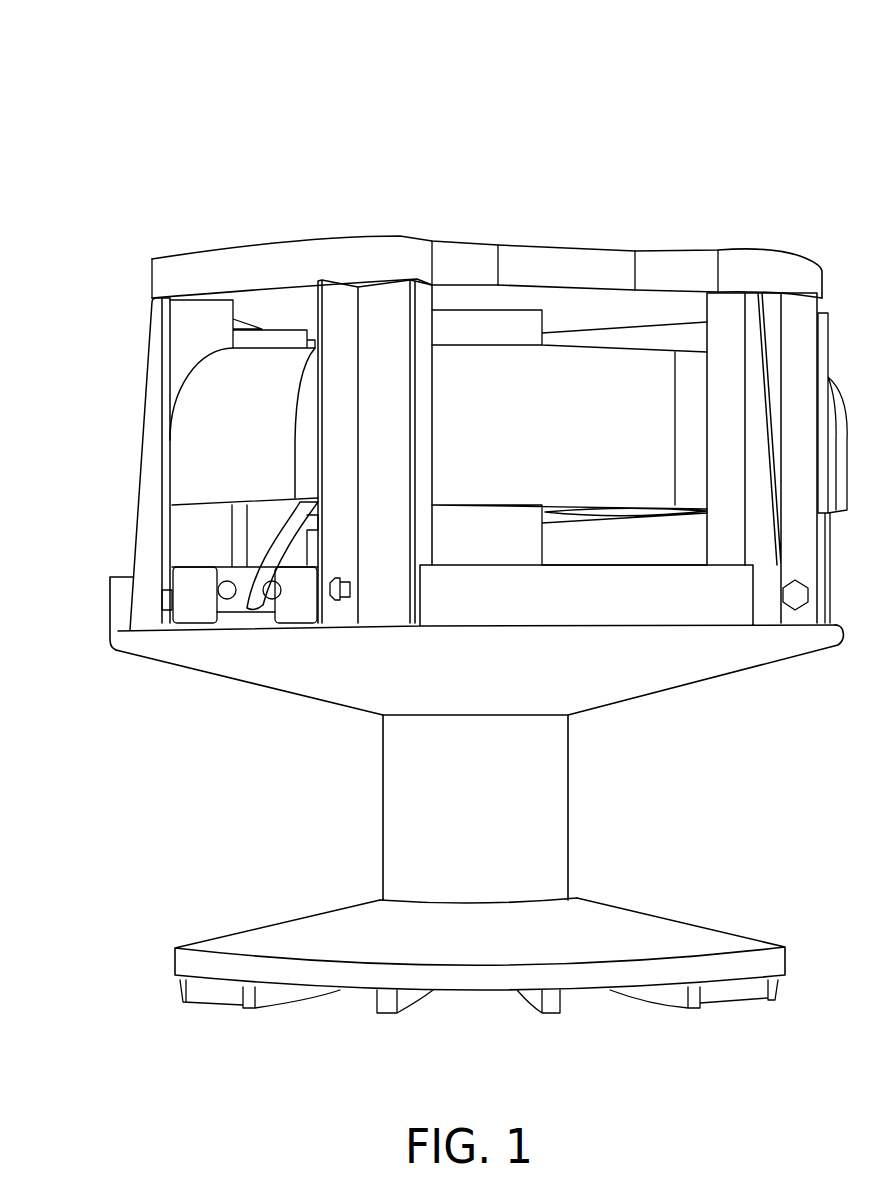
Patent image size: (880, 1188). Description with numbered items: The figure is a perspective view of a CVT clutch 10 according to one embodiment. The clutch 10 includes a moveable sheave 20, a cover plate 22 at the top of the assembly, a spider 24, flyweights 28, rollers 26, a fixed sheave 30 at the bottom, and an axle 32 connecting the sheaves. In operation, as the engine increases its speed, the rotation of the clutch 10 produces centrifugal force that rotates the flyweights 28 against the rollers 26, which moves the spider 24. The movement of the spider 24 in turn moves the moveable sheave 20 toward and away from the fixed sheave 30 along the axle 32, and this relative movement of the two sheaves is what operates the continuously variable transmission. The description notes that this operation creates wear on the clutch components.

The CVT clutch 10 is at (560, 120).
The moveable sheave 20 is at (592, 652).
The cover plate 22 is at (623, 260).
The spider 24 is at (240, 400).
The rollers 26 is at (270, 505).
The flyweights 28 is at (247, 553).
The fixed sheave 30 is at (647, 935).
The axle 32 is at (548, 835).